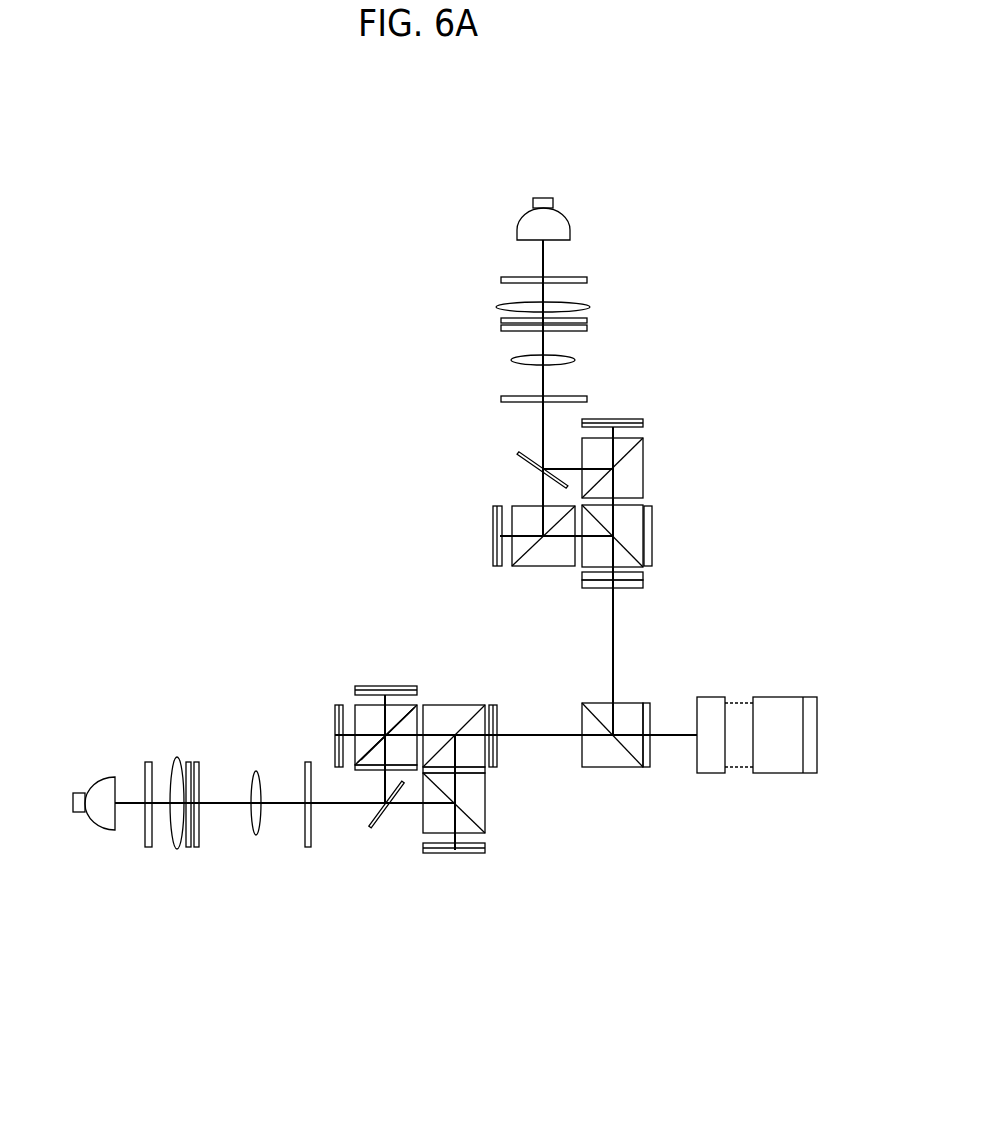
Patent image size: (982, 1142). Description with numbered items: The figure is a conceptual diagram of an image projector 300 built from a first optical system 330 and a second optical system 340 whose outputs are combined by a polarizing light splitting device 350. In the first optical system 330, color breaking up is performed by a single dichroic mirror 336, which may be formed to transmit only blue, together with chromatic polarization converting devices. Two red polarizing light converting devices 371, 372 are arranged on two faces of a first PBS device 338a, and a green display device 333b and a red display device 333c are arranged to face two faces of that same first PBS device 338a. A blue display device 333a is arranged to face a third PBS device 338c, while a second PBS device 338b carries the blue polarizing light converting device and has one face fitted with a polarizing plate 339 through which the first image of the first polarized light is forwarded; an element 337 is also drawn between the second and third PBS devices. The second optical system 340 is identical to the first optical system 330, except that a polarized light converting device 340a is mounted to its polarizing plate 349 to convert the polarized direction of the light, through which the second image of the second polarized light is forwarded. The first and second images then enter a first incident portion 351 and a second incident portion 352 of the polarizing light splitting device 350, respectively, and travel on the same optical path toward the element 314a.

The image projector 300 is at (656, 246).
The second optical system 340 is at (430, 361).
The first optical system 330 is at (235, 906).
The polarizing plate 349 is at (585, 578).
The polarized light converting device 340a is at (642, 585).
The first PBS device 338a is at (358, 710).
The red display device 333c is at (367, 686).
The red polarizing light converting device 372 is at (417, 710).
The second PBS device 338b is at (472, 710).
The polarizing plate 339 is at (499, 713).
The green display device 333b is at (336, 728).
The wave plate 337 is at (485, 770).
The third PBS device 338c is at (485, 820).
The blue display device 333a is at (435, 853).
The dichroic mirror 336 is at (383, 817).
The red polarizing light converting device 371 is at (369, 771).
The second incident portion 352 is at (624, 710).
The first incident portion 351 is at (610, 761).
The polarizing light splitting device 350 is at (635, 793).
The camera 314a is at (778, 769).